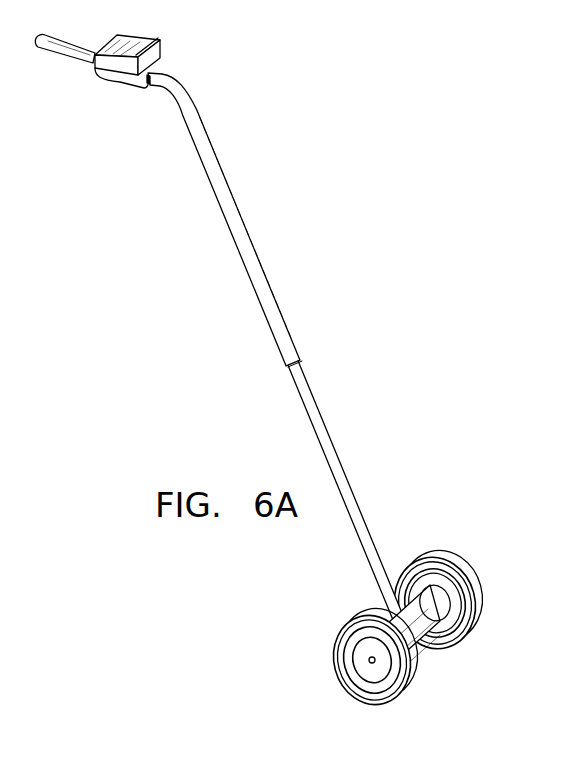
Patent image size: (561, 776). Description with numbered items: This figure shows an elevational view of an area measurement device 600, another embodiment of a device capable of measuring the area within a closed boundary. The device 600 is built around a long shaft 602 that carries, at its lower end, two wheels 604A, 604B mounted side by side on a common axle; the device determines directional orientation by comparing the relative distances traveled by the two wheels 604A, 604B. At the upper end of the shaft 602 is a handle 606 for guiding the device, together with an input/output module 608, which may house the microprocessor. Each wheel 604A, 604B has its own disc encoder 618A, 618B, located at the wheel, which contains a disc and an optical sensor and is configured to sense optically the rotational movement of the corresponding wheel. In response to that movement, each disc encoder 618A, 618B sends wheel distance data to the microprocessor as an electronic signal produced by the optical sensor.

The area measurement device 600 is at (277, 382).
The handle shaft 602 is at (310, 387).
The wheel 604A is at (396, 669).
The wheel 604B is at (451, 588).
The handle 606 is at (68, 63).
The input/output module 608 is at (163, 53).
The disc encoder 618A is at (417, 653).
The disc encoder 618B is at (441, 640).